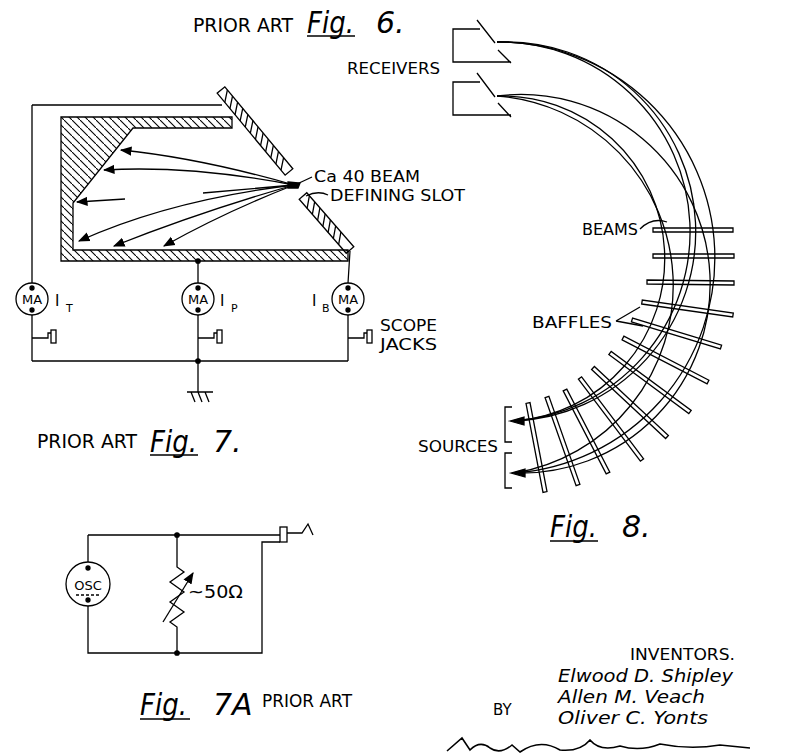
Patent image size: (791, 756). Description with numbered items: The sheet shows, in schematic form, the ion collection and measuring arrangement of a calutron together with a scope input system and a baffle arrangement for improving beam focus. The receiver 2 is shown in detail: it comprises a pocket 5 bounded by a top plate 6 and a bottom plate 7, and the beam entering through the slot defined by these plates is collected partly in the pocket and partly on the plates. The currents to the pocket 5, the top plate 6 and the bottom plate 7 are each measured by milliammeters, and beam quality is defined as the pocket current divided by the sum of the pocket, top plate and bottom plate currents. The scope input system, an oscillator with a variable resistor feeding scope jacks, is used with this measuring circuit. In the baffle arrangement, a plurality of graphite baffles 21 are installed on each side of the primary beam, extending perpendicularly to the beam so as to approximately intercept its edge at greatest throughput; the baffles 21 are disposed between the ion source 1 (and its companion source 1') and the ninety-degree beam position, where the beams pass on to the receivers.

In FIG. 8, the ion source 1 is at (497, 479).
In FIG. 8, the source 1' is at (493, 422).
In FIG. 8, the baffles 21 is at (566, 390).
In FIG. 7, the receiver 2 is at (220, 155).
In FIG. 7, the pocket 5 is at (225, 260).
In FIG. 7, the top plate 6 is at (268, 142).
In FIG. 7, the bottom plate 7 is at (338, 227).